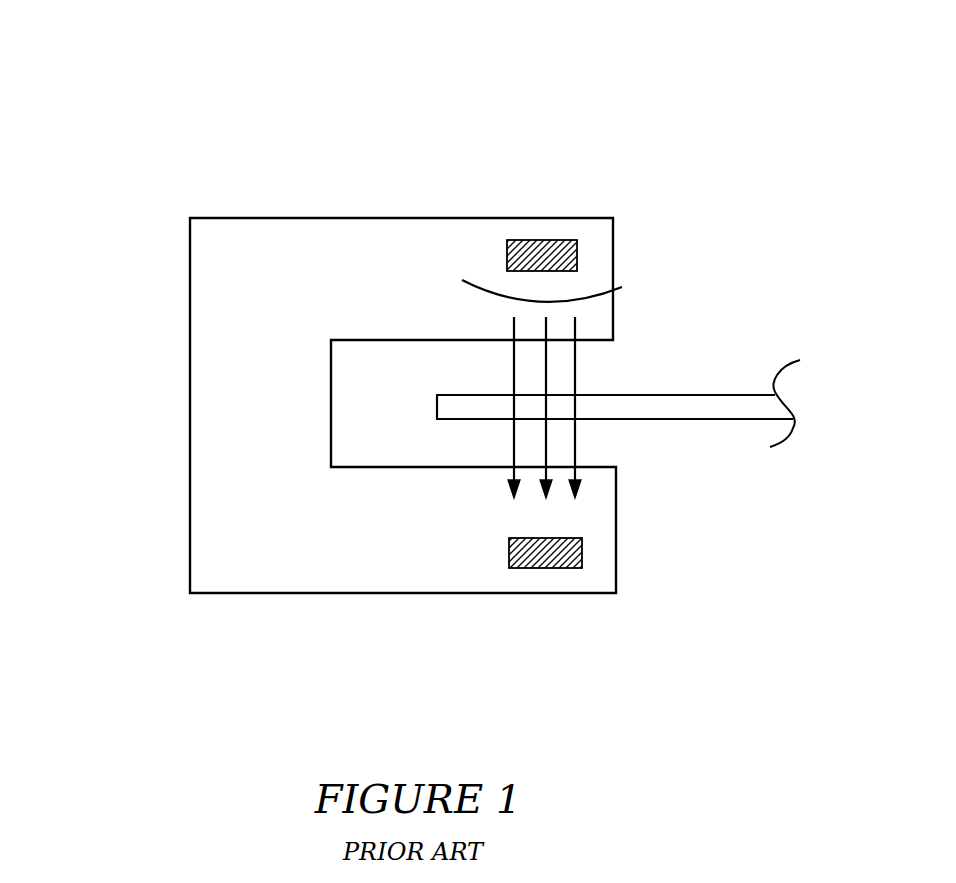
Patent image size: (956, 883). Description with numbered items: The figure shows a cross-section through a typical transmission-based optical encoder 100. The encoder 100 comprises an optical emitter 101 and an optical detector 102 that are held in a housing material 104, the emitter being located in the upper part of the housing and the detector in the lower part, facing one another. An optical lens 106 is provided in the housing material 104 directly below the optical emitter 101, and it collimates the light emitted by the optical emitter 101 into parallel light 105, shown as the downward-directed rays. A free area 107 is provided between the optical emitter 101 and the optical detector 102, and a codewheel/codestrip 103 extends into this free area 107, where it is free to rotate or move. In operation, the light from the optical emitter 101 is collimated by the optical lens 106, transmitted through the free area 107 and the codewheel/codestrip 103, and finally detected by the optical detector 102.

The transmission-based optical encoder 100 is at (673, 109).
The optical emitter 101 is at (530, 240).
The optical detector 102 is at (530, 568).
The codewheel/codestrip 103 is at (719, 403).
The housing material 104 is at (215, 468).
The parallel light 105 is at (513, 363).
The optical lens 106 is at (594, 288).
The free area 107 is at (370, 415).